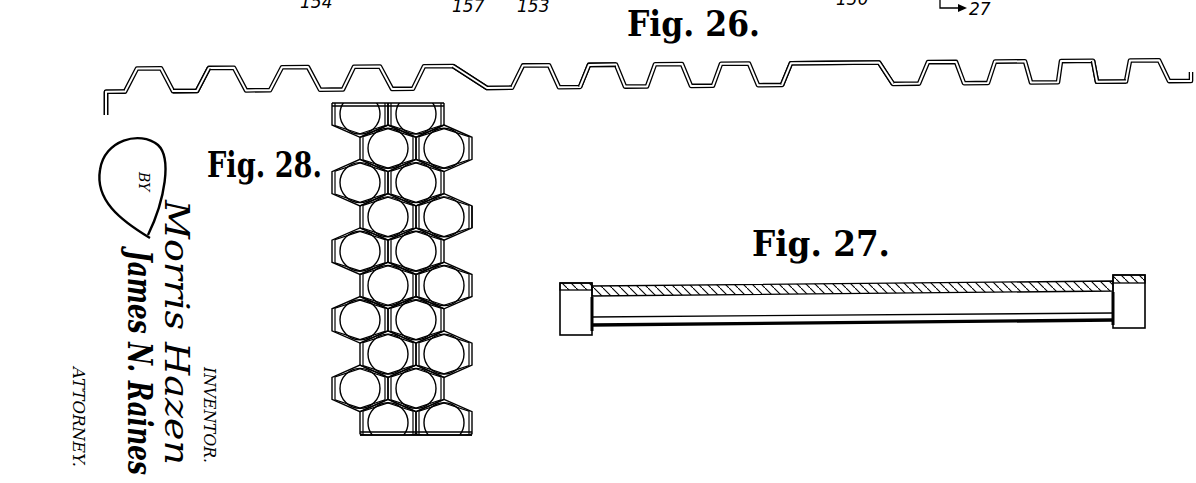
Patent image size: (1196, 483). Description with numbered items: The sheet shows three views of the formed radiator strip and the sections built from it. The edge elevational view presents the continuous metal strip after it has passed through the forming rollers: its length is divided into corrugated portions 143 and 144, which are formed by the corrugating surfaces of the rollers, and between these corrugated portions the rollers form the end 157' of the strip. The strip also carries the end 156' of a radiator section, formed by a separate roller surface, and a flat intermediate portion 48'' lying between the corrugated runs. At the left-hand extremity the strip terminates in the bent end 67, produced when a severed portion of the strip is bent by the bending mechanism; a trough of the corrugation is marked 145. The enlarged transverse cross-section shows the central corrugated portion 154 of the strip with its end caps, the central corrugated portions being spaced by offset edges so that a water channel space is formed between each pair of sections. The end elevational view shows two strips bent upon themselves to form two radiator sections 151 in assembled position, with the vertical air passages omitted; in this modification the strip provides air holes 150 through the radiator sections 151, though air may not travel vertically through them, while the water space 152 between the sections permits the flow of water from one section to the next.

In FIG. 26, the bent end 67 is at (104, 112).
In FIG. 26, the corrugation trough of strip 145 is at (204, 86).
In FIG. 26, the end of the strip 157' is at (486, 91).
In FIG. 26, the corrugated portion 144 is at (593, 78).
In FIG. 26, the flat intermediate portion of strip 48'' is at (806, 88).
In FIG. 26, the end of section 156' is at (861, 84).
In FIG. 26, the corrugated portion 143 is at (1100, 83).
In FIG. 28, the air holes 150 is at (358, 328).
In FIG. 28, the radiator sections 151 is at (473, 215).
In FIG. 28, the water space 152 is at (415, 436).
In FIG. 27, the central corrugated portions 154 is at (790, 318).